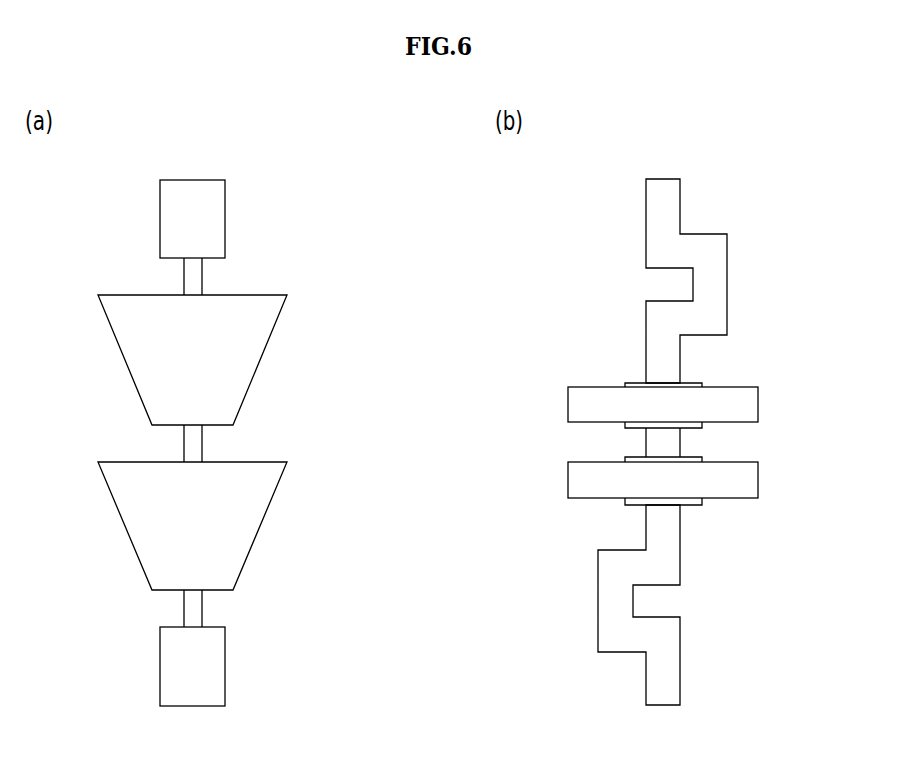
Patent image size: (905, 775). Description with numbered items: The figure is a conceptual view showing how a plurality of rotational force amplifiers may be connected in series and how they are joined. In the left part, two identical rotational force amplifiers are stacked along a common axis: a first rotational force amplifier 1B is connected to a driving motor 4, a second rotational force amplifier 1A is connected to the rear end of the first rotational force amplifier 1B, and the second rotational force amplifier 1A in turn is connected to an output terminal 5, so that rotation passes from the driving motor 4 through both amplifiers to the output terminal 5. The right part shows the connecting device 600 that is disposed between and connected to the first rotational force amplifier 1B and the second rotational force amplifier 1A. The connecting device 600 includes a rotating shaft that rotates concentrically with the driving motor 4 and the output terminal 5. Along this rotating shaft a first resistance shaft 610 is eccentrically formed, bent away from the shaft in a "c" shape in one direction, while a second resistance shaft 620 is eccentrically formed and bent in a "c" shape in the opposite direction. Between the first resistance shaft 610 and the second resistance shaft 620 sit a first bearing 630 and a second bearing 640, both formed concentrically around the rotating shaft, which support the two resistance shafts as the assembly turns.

The output terminal 5 is at (225, 203).
The driving motor 4 is at (225, 652).
The second rotational force amplifier 1A is at (322, 293).
The first rotational force amplifier 1B is at (322, 460).
The connecting device 600 is at (716, 166).
The first resistance shaft 610 is at (598, 598).
The second resistance shaft 620 is at (727, 268).
The first bearing 630 is at (758, 397).
The second bearing 640 is at (758, 470).